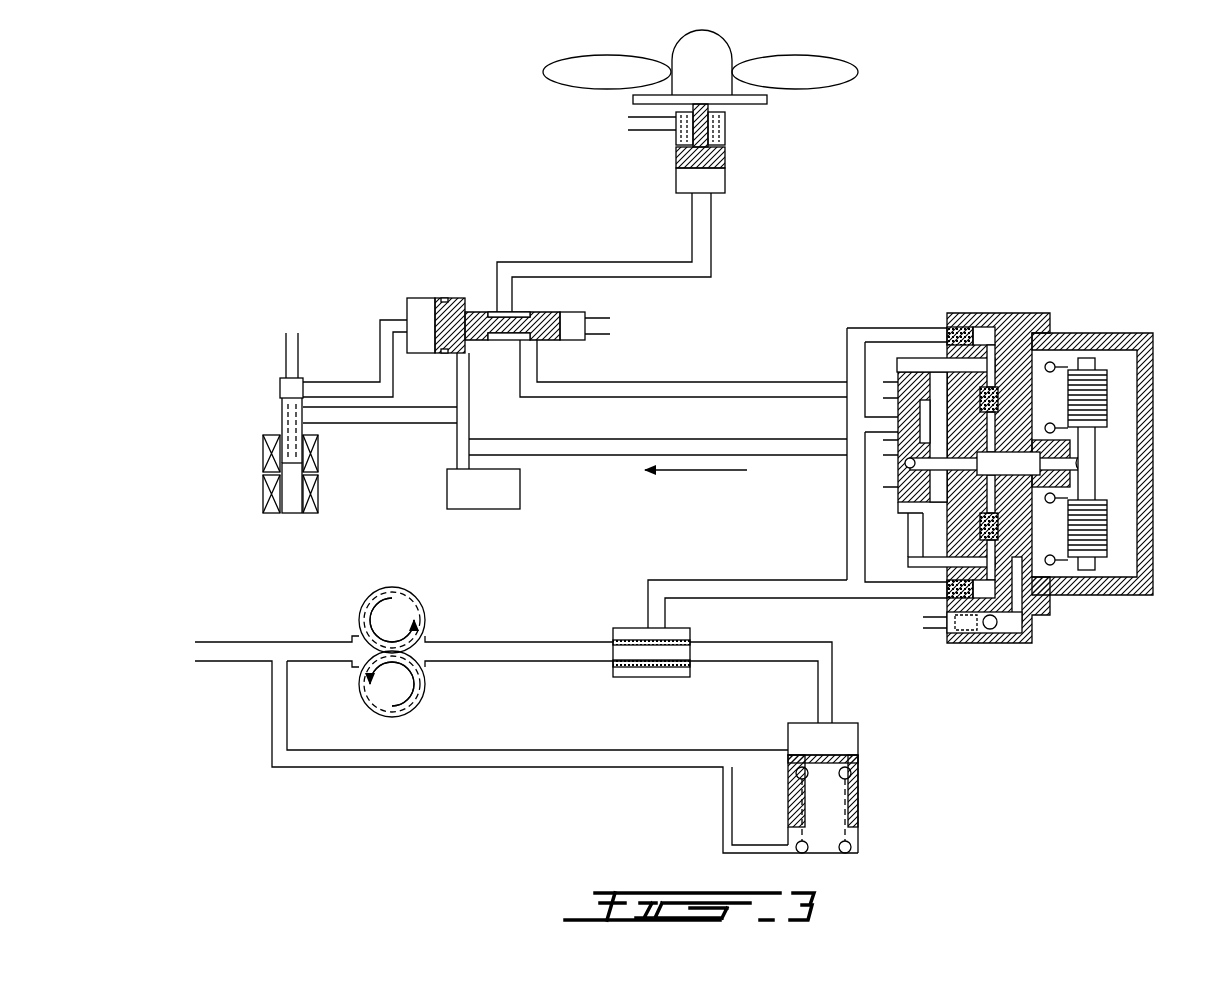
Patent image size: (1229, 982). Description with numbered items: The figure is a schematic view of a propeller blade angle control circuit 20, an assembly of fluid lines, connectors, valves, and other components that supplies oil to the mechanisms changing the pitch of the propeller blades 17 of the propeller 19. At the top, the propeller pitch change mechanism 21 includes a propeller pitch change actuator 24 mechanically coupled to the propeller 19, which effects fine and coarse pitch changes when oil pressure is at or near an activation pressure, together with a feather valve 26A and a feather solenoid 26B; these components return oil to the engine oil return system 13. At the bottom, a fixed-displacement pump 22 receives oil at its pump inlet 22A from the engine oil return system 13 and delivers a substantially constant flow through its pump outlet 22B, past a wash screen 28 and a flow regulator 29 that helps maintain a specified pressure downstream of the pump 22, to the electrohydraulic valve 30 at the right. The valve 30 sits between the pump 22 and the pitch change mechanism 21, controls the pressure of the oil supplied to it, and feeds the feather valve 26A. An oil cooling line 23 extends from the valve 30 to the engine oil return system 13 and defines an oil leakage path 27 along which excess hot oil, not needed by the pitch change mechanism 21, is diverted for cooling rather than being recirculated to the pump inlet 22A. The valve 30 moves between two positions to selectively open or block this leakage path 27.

The engine oil return system 13 is at (483, 489).
The propeller blades 17 is at (590, 55).
The propeller 19 is at (715, 32).
The control circuit 20 is at (330, 305).
The propeller pitch change mechanism 21 is at (535, 245).
The fixed-displacement pump 22 is at (526, 669).
The pump inlet 22A is at (340, 630).
The pump outlet 22B is at (442, 628).
The oil cooling line 23 is at (575, 458).
The propeller pitch change actuator 24 is at (725, 163).
The feather valve 26A is at (441, 298).
The feather solenoid 26B is at (288, 484).
The oil leakage path 27 is at (697, 472).
The wash screen 28 is at (660, 684).
The flow regulator 29 is at (870, 780).
The valve 30 is at (1112, 236).